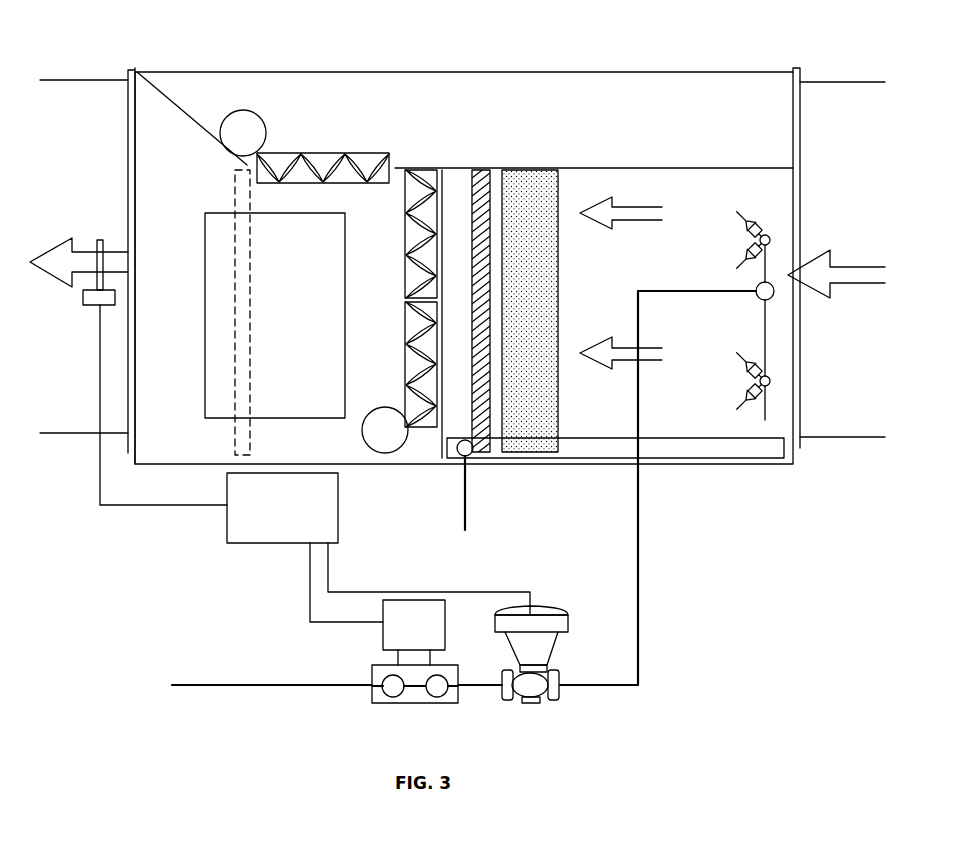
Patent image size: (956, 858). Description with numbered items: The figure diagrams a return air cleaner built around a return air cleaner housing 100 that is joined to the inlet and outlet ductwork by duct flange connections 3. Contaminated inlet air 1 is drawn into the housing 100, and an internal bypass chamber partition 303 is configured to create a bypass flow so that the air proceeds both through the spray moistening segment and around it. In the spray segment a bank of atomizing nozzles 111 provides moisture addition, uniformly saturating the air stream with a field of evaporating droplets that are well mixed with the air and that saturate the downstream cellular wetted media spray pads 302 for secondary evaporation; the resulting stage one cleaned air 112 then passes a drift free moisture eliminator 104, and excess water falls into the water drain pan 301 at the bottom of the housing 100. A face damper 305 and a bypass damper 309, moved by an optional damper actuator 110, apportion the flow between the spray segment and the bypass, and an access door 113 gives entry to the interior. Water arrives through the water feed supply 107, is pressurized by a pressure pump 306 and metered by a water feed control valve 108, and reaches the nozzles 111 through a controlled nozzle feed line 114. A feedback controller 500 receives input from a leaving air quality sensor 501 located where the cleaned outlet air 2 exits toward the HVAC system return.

The contaminated inlet air 1 is at (855, 285).
The cleaned outlet air 2 is at (86, 252).
The duct flange connection 3 is at (128, 72).
The return air cleaner housing 100 is at (455, 72).
The drift free moisture eliminator 104 is at (486, 332).
The water feed supply 107 is at (207, 684).
The water feed control valve 108 is at (532, 606).
The damper actuator 110 is at (266, 125).
The atomizing nozzles 111 is at (733, 339).
The stage 1 cleaned air 112 is at (617, 218).
The access door 113 is at (295, 336).
The controlled nozzle feed line 114 is at (645, 597).
The water drain pan 301 is at (705, 447).
The cellular wetted media spray pads 302 is at (553, 262).
The bypass chamber partition 303 is at (440, 134).
The face damper 305 is at (412, 236).
The pressure pump 306 is at (383, 638).
The bypass damper 309 is at (300, 183).
The feedback controller 500 is at (294, 520).
The leaving air quality sensor 501 is at (100, 350).